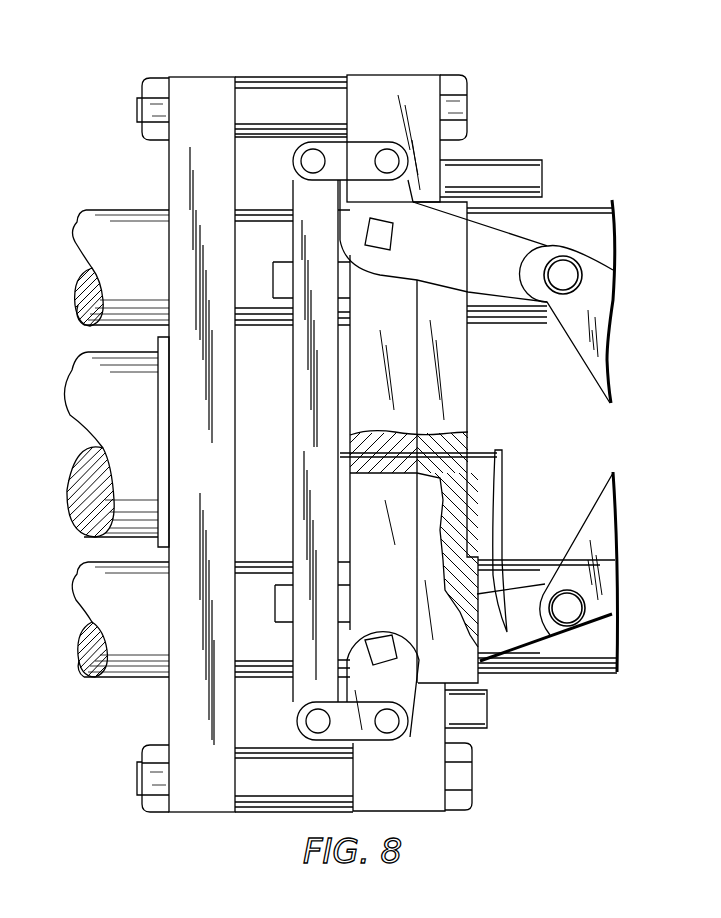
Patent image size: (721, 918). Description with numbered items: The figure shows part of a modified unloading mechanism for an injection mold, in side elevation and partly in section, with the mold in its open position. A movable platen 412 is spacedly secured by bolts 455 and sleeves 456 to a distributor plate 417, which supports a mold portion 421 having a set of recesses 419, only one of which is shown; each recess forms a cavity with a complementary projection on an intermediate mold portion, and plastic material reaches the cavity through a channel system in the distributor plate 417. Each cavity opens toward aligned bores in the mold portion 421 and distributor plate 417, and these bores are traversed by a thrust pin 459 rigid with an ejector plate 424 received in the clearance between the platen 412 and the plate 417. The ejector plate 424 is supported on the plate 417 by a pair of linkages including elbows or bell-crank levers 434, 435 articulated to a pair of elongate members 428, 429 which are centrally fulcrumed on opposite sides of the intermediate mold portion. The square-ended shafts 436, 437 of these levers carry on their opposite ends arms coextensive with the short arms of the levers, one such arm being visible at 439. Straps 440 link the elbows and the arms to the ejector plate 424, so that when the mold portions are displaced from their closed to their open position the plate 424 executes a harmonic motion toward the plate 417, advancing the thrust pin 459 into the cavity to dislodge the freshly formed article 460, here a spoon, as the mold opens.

The movable platen 412 is at (207, 802).
The distributor plate 417 is at (402, 78).
The recess 419 is at (470, 612).
The mold portion 421 is at (462, 366).
The ejector plate 424 is at (302, 462).
The elongate member 428 is at (594, 313).
The elongate member 429 is at (600, 522).
The bell-crank lever 434 is at (390, 268).
The bell-crank lever 435 is at (543, 632).
The square-ended shaft 436 is at (390, 235).
The square-ended shaft 437 is at (383, 630).
The arm 439 is at (405, 690).
The strap 440 is at (373, 143).
The bolt 455 is at (460, 80).
The sleeve 456 is at (293, 87).
The thrust pin 459 is at (482, 452).
The freshly formed article 460 is at (504, 478).